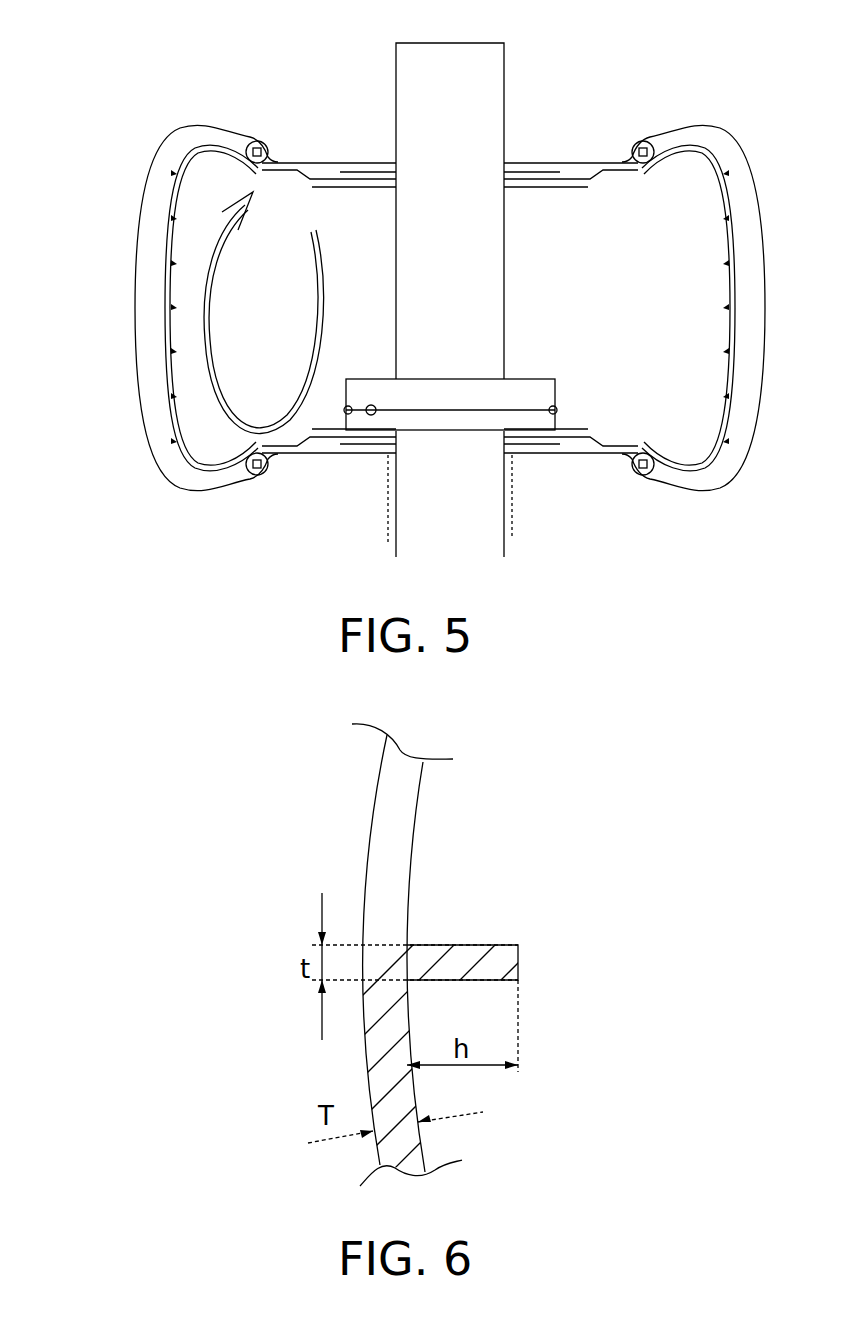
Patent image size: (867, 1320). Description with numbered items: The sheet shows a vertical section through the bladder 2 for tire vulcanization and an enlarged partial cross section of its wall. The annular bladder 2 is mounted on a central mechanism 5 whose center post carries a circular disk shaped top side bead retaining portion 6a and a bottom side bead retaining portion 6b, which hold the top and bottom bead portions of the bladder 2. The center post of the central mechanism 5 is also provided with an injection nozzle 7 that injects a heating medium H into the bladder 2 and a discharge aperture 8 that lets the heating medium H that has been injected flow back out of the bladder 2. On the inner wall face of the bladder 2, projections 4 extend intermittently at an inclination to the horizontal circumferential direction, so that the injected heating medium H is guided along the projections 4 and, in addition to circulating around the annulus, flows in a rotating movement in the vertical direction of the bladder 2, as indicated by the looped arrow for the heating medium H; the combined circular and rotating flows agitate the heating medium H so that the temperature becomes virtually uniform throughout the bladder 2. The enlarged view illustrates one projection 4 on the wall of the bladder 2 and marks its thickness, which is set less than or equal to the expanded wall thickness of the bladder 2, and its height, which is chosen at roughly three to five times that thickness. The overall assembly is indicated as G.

In FIG. 5, the bladder for tire vulcanization 2 is at (735, 292).
In FIG. 6, the bladder for tire vulcanization 2 is at (372, 850).
In FIG. 5, the projections 4 is at (728, 215).
In FIG. 6, the projections 4 is at (475, 950).
In FIG. 5, the central mechanism 5 is at (508, 104).
In FIG. 5, the top side bead retaining portion 6a is at (366, 162).
In FIG. 5, the bottom side bead retaining portion 6b is at (540, 446).
In FIG. 5, the injection nozzle 7 is at (349, 406).
In FIG. 5, the discharge aperture 8 is at (373, 405).
In FIG. 5, the heating medium H is at (263, 313).
In FIG. 5, the tire / wheel assembly G is at (134, 296).